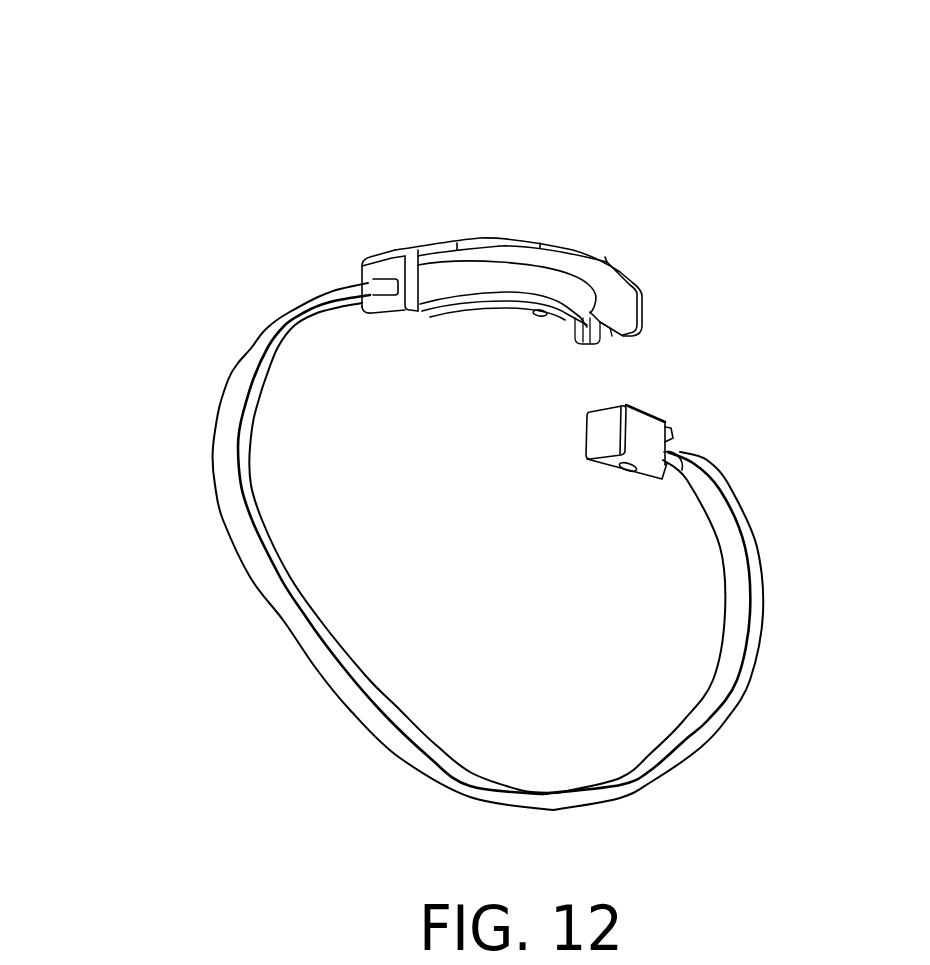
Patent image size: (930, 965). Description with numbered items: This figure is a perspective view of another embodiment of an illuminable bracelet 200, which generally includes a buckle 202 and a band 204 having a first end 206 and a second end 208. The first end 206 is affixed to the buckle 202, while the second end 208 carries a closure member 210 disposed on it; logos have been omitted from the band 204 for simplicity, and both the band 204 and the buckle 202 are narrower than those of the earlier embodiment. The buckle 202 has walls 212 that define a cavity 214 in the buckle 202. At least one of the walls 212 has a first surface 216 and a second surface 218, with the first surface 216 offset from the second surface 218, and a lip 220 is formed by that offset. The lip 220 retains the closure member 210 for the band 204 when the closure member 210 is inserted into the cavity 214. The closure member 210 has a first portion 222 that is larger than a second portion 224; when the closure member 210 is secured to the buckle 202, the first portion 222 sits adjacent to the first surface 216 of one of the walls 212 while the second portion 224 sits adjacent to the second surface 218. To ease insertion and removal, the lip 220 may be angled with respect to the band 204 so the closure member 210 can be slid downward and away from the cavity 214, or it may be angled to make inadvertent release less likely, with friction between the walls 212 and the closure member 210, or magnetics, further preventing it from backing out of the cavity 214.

The illuminable bracelet 200 is at (122, 100).
The buckle 202 is at (525, 258).
The band 204 is at (264, 347).
The first end 206 is at (345, 287).
The second end 208 is at (733, 495).
The closure member 210 is at (602, 440).
The walls 212 is at (577, 347).
The cavity 214 is at (595, 352).
The first surface 216 is at (553, 328).
The second surface 218 is at (613, 350).
The lip 220 is at (570, 338).
The first portion 222 is at (652, 455).
The second portion 224 is at (673, 445).